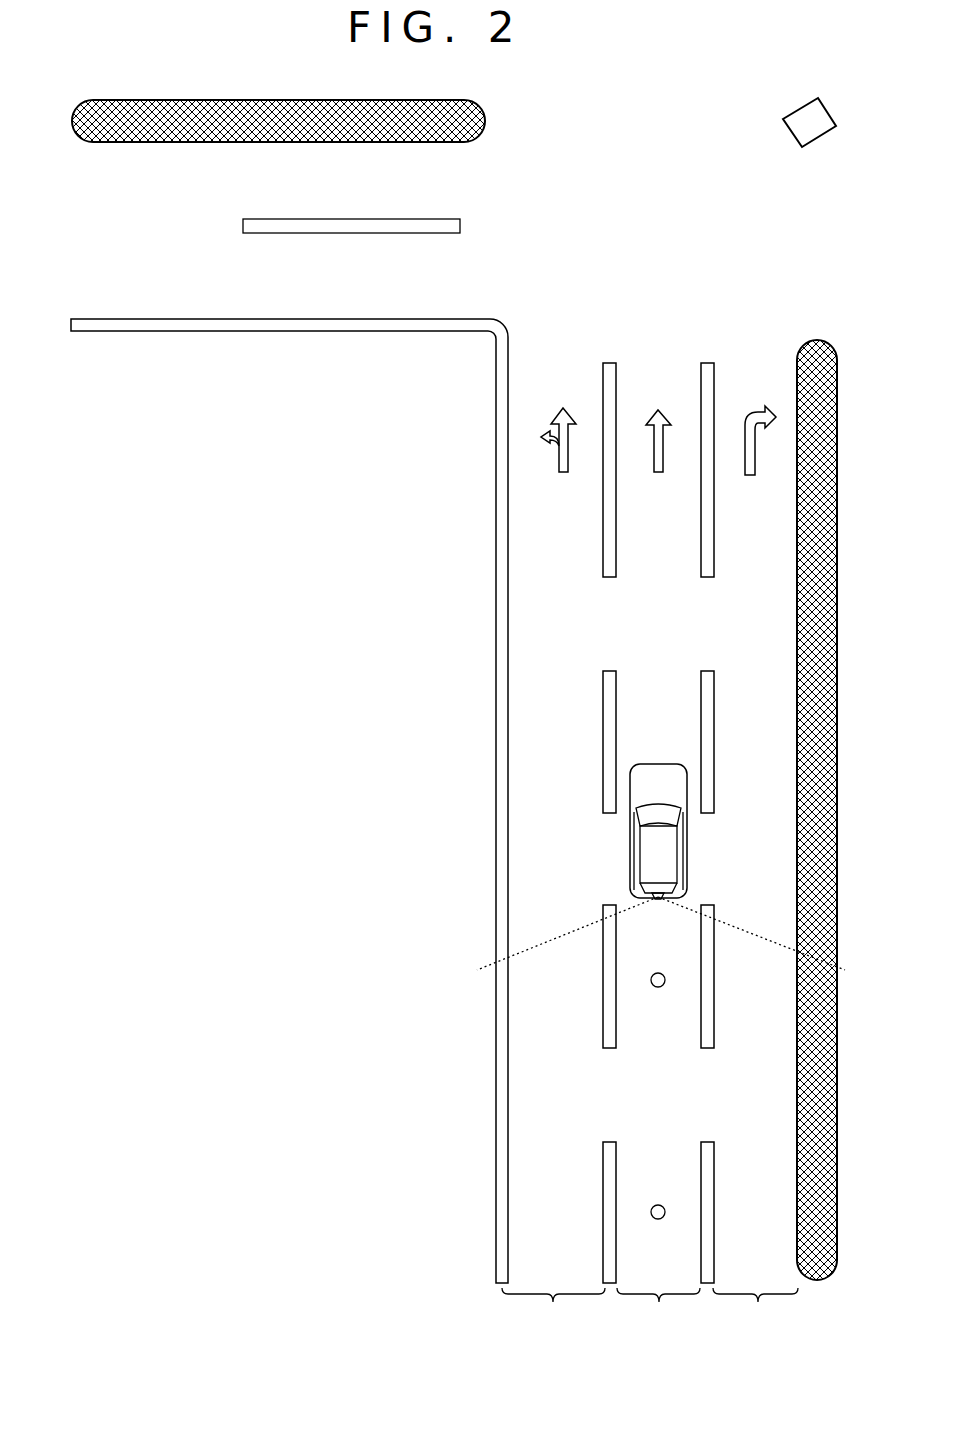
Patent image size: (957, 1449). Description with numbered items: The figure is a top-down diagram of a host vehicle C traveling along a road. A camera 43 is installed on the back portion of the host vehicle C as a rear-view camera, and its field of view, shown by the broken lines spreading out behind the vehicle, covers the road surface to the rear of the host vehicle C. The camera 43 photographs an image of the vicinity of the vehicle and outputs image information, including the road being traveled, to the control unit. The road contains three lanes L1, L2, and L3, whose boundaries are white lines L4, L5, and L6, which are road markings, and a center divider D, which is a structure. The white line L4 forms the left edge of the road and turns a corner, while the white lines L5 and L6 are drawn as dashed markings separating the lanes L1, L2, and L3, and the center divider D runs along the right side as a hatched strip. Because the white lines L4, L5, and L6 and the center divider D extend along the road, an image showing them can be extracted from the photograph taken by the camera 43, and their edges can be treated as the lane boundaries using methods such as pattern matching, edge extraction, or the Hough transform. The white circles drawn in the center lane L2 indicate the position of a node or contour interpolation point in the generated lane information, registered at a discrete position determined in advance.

The host vehicle C is at (688, 836).
The camera 43 is at (668, 891).
The lane L1 is at (553, 1319).
The lane L2 is at (658, 1319).
The lane L3 is at (755, 1319).
The white line L4 is at (497, 1184).
The white line L5 is at (603, 1184).
The white line L6 is at (701, 1184).
The center divider D is at (797, 1184).